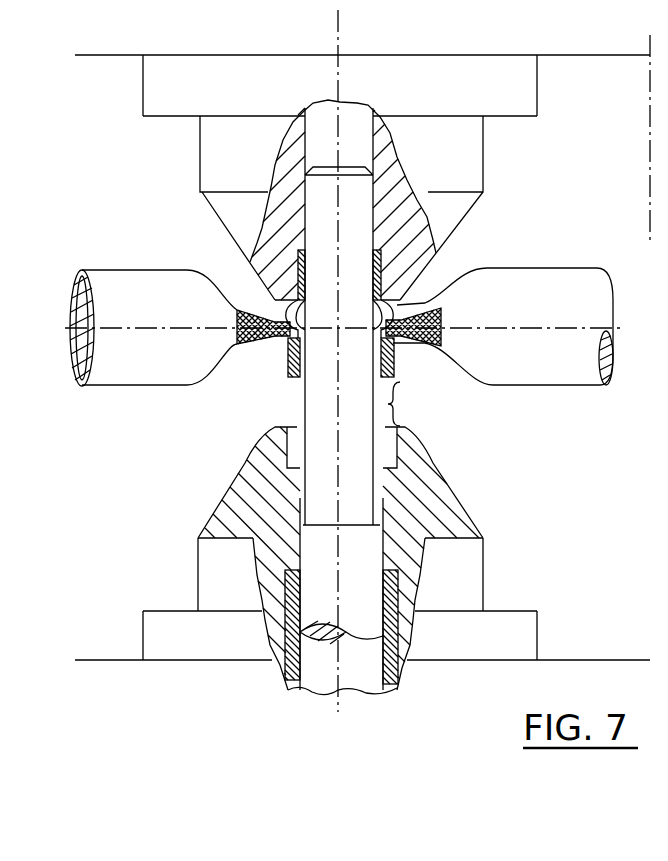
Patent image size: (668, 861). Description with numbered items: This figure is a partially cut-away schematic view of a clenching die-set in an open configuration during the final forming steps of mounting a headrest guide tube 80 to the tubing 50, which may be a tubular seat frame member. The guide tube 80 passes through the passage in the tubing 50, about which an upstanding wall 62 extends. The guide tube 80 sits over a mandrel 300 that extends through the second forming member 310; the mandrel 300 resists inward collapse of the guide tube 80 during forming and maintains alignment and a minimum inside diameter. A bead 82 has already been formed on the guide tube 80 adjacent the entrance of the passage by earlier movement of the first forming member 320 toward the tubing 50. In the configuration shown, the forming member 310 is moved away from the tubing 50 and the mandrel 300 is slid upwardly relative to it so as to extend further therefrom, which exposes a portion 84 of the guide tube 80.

The tubing 50 is at (538, 367).
The upstanding wall 62 is at (290, 358).
The headrest guide tube 80 is at (298, 273).
The bead 82 is at (408, 298).
The portion of the guide tube 84 is at (410, 404).
The mandrel 300 is at (318, 197).
The second forming member 310 is at (470, 585).
The first forming member 320 is at (462, 204).